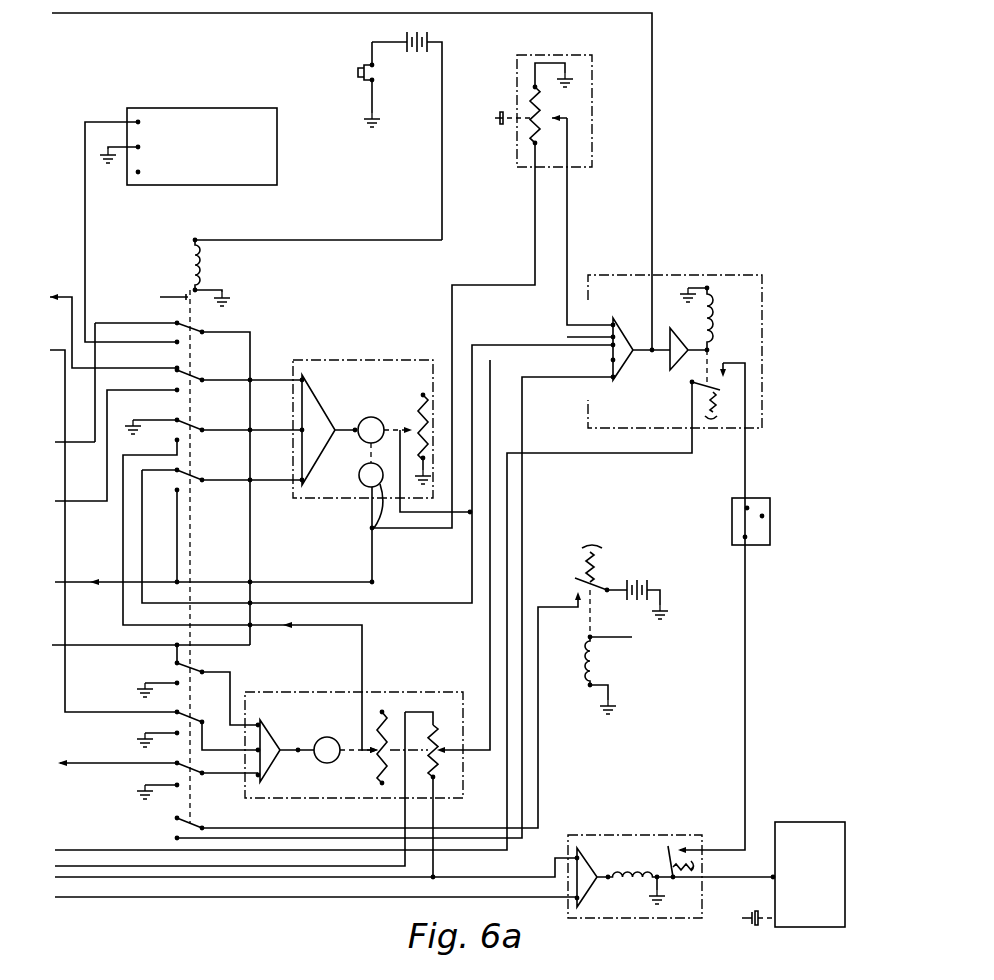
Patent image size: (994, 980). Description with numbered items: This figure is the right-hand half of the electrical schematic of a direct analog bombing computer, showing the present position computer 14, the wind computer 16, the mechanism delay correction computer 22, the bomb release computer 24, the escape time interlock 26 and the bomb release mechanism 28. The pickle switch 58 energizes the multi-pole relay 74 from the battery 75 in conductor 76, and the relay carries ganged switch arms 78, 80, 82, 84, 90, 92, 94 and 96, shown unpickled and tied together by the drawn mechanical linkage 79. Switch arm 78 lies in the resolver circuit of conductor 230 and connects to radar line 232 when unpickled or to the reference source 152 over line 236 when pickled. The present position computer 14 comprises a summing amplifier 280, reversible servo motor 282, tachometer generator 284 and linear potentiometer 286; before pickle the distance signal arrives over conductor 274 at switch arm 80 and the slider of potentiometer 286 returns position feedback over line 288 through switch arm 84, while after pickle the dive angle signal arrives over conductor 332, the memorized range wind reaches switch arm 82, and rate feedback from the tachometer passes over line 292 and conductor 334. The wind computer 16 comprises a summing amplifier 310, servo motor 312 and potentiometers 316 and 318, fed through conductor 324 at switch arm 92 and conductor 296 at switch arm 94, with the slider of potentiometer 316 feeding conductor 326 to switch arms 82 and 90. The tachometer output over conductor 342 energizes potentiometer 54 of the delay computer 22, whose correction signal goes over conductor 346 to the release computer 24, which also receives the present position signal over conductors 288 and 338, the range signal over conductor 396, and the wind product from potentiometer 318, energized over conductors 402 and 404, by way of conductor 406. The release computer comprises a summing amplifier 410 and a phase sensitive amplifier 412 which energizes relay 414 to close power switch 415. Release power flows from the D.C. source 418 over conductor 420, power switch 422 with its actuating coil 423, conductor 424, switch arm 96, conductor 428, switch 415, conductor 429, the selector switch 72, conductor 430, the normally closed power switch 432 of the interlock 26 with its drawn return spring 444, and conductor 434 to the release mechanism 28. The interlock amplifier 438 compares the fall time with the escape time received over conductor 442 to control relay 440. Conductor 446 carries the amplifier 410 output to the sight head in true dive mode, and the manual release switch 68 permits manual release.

The present position computer 14 is at (300, 360).
The wind computer 16 is at (375, 692).
The mechanism delay correction computer 22 is at (521, 56).
The bomb release computer 24 is at (706, 275).
The escape time interlock 26 is at (618, 918).
The bomb release mechanism 28 is at (790, 822).
The mechanism delay potentiometer 54 is at (530, 128).
The pickle switch 58 is at (356, 78).
The manual bomb release switch 68 is at (756, 896).
The automatic-manual release selector switch 72 is at (770, 530).
The multi-pole relay 74 is at (186, 250).
The battery 75 is at (428, 33).
The conductor 76 is at (308, 240).
The switch arm 78 is at (190, 330).
The mechanical linkage 79 is at (164, 297).
The switch arm 80 is at (205, 360).
The switch arm 82 is at (205, 410).
The switch arm 84 is at (205, 460).
The switch arm 90 is at (204, 653).
The switch arm 92 is at (198, 716).
The switch arm 94 is at (186, 778).
The switch arm 96 is at (192, 822).
The alternating current reference voltage source 152 is at (180, 108).
The conductor 230 is at (65, 648).
The line 232 is at (65, 445).
The line 236 is at (85, 212).
The conductor 274 is at (72, 300).
The summing amplifier 280 is at (318, 395).
The reversible servo motor 282 is at (362, 420).
The tachometer generator 284 is at (378, 535).
The linear potentiometer 286 is at (418, 408).
The line 288 is at (472, 560).
The line 292 is at (110, 568).
The conductor 296 is at (110, 746).
The summing amplifier 310 is at (272, 728).
The reversible servo motor 312 is at (333, 738).
The linear potentiometer 316 is at (377, 762).
The linear potentiometer 318 is at (436, 728).
The conductor 324 is at (63, 350).
The conductor 326 is at (297, 628).
The conductor 332 is at (65, 504).
The conductor 334 is at (177, 555).
The conductor 338 is at (482, 345).
The conductor 342 is at (535, 262).
The conductor 346 is at (567, 210).
The conductor 396 is at (522, 460).
The conductor 402 is at (253, 897).
The conductor 404 is at (277, 877).
The conductor 406 is at (468, 752).
The summing amplifier 410 is at (634, 302).
The phase sensitive amplifier 412 is at (672, 365).
The relay 414 is at (715, 295).
The power switch 415 is at (722, 402).
The source of D.C. power 418 is at (640, 578).
The conductor 420 is at (625, 593).
The relay operated power switch 422 is at (600, 578).
The actuating coil 423 is at (595, 662).
The conductor 424 is at (258, 828).
The conductor 428 is at (600, 456).
The conductor 429 is at (745, 450).
The conductor 430 is at (745, 731).
The relay operated power switch 432 is at (668, 848).
The conductor 434 is at (712, 877).
The phase sensitive amplifier 438 is at (582, 848).
The relay 440 is at (650, 882).
The conductor 442 is at (352, 897).
The spring 444 is at (678, 845).
The conductor 446 is at (652, 182).